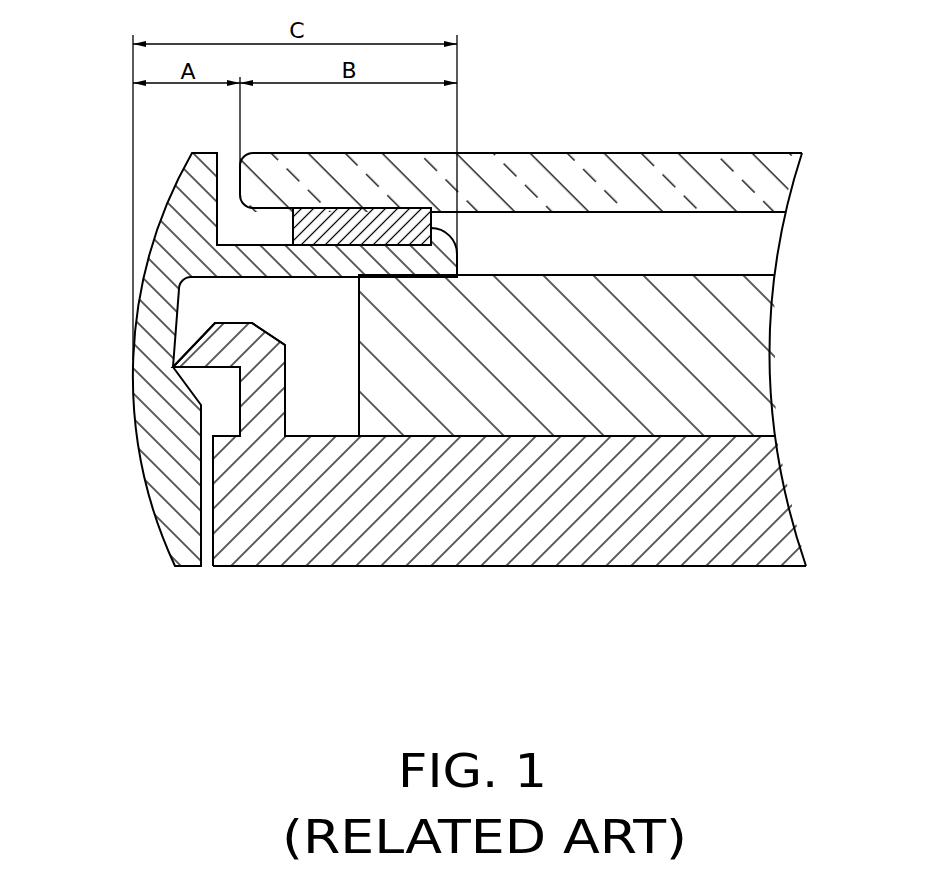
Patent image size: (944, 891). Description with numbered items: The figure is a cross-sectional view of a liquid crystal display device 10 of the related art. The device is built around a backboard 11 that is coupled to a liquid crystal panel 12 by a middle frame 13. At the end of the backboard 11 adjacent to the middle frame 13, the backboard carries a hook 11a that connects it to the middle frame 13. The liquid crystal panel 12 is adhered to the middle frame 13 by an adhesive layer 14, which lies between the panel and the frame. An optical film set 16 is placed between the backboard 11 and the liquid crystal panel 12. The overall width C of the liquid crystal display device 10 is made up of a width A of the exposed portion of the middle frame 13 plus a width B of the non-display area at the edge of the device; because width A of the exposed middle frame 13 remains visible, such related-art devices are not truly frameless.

The liquid crystal display device 10 is at (510, 77).
The backboard 11 is at (395, 542).
The hook 11a is at (215, 352).
The liquid crystal panel 12 is at (692, 178).
The middle frame 13 is at (160, 297).
The adhesive layer 14 is at (367, 227).
The optical film set 16 is at (750, 362).